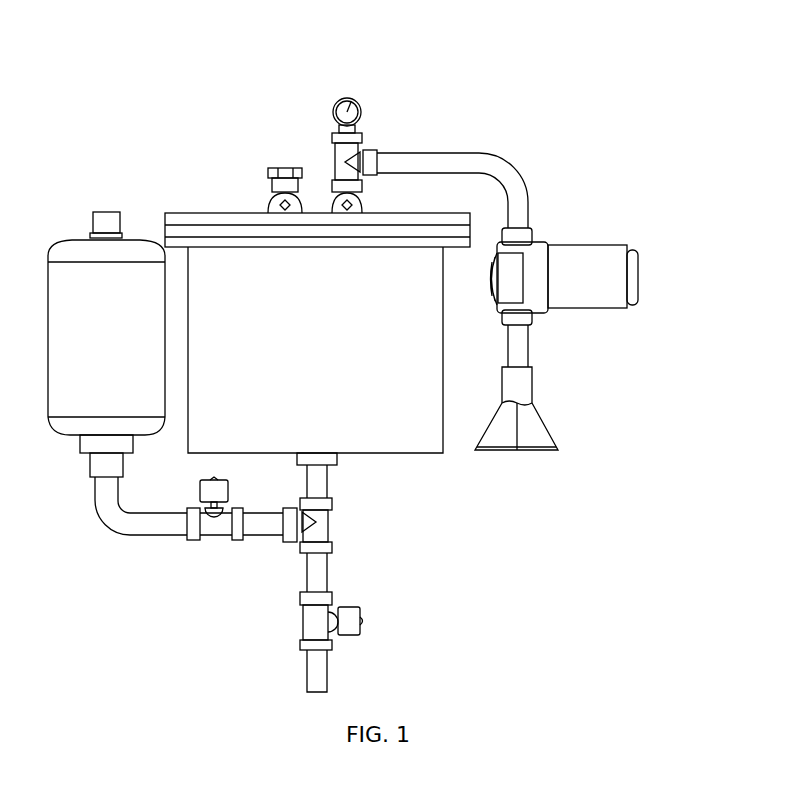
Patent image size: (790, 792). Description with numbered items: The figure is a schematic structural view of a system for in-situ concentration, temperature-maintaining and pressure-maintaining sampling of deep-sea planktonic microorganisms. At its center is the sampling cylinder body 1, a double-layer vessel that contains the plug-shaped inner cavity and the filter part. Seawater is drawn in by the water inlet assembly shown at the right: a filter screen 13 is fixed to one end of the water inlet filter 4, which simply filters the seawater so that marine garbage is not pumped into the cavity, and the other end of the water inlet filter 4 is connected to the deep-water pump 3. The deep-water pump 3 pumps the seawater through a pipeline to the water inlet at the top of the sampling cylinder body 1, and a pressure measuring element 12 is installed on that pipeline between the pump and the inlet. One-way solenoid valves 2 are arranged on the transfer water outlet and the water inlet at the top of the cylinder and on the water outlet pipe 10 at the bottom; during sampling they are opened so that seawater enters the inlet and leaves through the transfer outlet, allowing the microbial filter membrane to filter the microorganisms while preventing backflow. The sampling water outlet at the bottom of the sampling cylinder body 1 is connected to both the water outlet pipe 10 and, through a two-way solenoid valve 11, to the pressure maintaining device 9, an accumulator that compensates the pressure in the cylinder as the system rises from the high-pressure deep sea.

The sampling cylinder body 1 is at (415, 412).
The one-way solenoid valve 2 is at (290, 193).
The deep-water pump 3 is at (558, 287).
The water inlet filter 4 is at (527, 422).
The pressure maintaining device 9 is at (147, 287).
The water outlet pipe 10 is at (315, 558).
The two-way solenoid valve 11 is at (212, 530).
The pressure measuring element 12 is at (345, 110).
The filter screen 13 is at (515, 453).